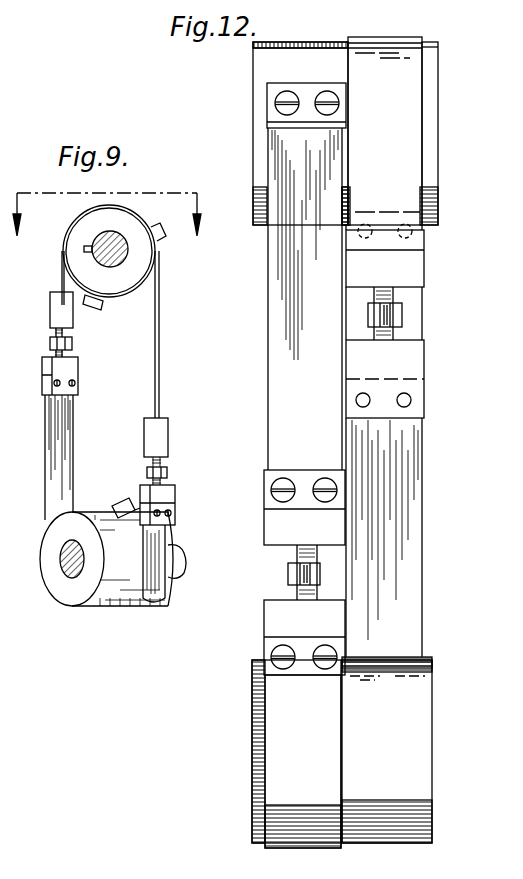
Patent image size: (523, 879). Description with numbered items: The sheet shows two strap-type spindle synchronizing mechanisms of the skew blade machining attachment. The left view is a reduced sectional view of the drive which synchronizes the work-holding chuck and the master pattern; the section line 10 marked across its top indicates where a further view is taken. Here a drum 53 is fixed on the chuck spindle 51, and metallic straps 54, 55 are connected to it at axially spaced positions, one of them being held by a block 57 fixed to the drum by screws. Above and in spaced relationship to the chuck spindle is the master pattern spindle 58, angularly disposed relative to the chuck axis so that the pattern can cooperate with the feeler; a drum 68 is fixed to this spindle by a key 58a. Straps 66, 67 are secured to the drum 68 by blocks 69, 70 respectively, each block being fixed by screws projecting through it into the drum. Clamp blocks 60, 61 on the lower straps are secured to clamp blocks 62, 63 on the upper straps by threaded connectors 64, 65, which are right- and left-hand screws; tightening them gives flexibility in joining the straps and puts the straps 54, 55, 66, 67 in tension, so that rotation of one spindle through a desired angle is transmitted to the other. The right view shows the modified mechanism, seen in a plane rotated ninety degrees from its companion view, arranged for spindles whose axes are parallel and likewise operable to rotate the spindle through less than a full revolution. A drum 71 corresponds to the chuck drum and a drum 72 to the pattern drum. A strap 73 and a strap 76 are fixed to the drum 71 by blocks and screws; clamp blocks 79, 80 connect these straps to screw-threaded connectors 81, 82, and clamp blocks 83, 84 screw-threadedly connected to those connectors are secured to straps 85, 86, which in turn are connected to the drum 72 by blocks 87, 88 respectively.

In FIG. 9, the section line 10 is at (109, 215).
In FIG. 9, the chuck spindle 51 is at (60, 558).
In FIG. 9, the drum 53 is at (70, 607).
In FIG. 9, the strap 54 is at (45, 447).
In FIG. 9, the strap 55 is at (163, 546).
In FIG. 9, the block 57 is at (128, 500).
In FIG. 9, the master pattern spindle 58 is at (114, 233).
In FIG. 9, the key 58a is at (84, 248).
In FIG. 9, the clamp block 60 is at (42, 376).
In FIG. 9, the clamp block 61 is at (175, 494).
In FIG. 9, the clamp block 62 is at (50, 316).
In FIG. 9, the clamp block 63 is at (168, 440).
In FIG. 9, the threaded connector 64 is at (50, 344).
In FIG. 9, the threaded connector 65 is at (167, 472).
In FIG. 9, the strap 66 is at (62, 268).
In FIG. 9, the strap 67 is at (159, 370).
In FIG. 9, the drum 68 is at (133, 281).
In FIG. 9, the block 69 is at (95, 308).
In FIG. 9, the block 70 is at (165, 235).
In FIG. 12, the drum 71 is at (252, 794).
In FIG. 12, the drum 72 is at (253, 93).
In FIG. 12, the strap 73 is at (307, 781).
In FIG. 12, the strap 76 is at (422, 549).
In FIG. 12, the clamp block 79 is at (264, 635).
In FIG. 12, the clamp block 80 is at (424, 376).
In FIG. 12, the screw-threaded connector 81 is at (288, 574).
In FIG. 12, the screw-threaded connector 82 is at (402, 315).
In FIG. 12, the clamp block 83 is at (264, 543).
In FIG. 12, the clamp block 84 is at (424, 268).
In FIG. 12, the strap 85 is at (268, 313).
In FIG. 12, the strap 86 is at (412, 26).
In FIG. 12, the block 87 is at (318, 70).
In FIG. 12, the block 88 is at (396, 244).